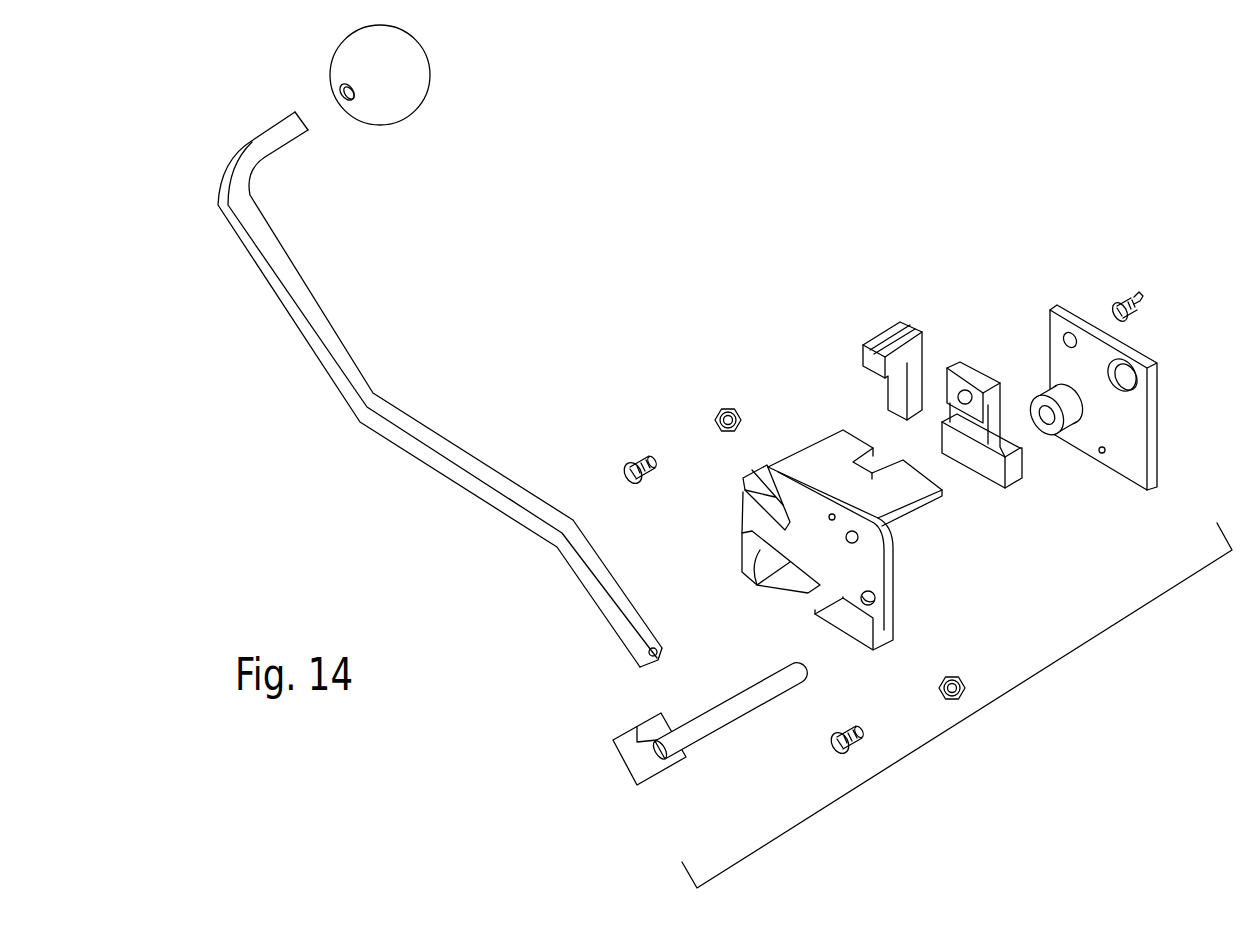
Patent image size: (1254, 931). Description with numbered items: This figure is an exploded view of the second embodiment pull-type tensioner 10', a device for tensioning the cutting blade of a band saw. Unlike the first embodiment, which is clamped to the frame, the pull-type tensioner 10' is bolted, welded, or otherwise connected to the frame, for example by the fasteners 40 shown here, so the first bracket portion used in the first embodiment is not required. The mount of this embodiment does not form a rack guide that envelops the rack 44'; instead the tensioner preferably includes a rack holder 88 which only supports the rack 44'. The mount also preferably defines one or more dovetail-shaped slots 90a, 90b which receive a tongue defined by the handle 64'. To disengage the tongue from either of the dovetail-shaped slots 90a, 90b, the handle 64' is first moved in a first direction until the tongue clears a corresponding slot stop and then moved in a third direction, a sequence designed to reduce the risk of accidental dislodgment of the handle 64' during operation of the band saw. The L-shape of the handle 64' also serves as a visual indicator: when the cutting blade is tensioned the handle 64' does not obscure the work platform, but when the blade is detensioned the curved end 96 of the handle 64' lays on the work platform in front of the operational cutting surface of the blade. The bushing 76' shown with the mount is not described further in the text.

The curved end 96 is at (282, 245).
The handle 64' is at (440, 389).
The fasteners 40 is at (622, 470).
The first dovetail-shaped slot 90a is at (743, 483).
The second dovetail-shaped slot 90b is at (757, 585).
The rack 44' is at (851, 365).
The rack holder 88 is at (983, 380).
The bushing 76' is at (1057, 460).
The pull-type tensioner 10' is at (957, 705).